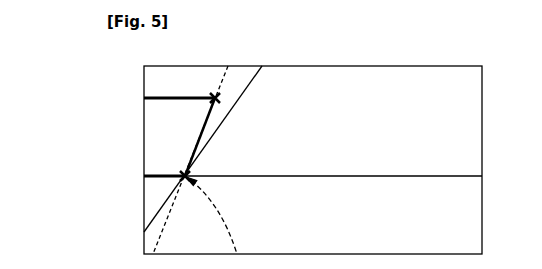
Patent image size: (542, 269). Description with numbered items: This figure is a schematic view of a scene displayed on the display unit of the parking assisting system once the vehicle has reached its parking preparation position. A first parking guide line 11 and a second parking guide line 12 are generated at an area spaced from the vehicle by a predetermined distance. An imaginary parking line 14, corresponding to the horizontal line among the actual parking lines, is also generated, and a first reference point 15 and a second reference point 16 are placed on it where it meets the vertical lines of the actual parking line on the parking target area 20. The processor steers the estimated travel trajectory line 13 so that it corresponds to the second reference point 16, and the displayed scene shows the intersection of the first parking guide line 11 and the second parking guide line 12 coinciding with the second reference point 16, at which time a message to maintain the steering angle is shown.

The first parking guide line 11 is at (252, 83).
The second parking guide line 12 is at (322, 176).
The estimated travel trajectory line 13 is at (223, 225).
The imaginary parking line 14 is at (227, 76).
The first reference point 15 is at (214, 90).
The second reference point 16 is at (182, 173).
The parking target area 20 is at (157, 98).